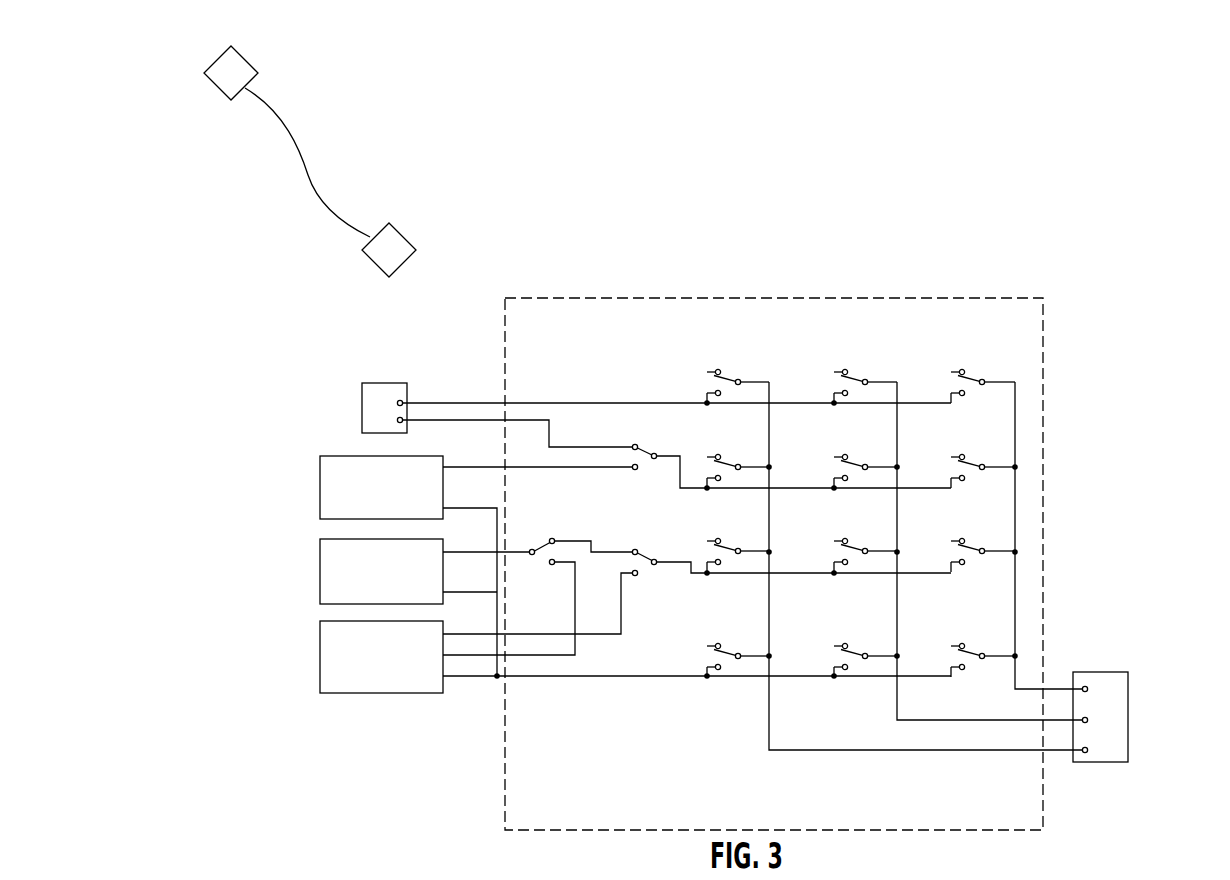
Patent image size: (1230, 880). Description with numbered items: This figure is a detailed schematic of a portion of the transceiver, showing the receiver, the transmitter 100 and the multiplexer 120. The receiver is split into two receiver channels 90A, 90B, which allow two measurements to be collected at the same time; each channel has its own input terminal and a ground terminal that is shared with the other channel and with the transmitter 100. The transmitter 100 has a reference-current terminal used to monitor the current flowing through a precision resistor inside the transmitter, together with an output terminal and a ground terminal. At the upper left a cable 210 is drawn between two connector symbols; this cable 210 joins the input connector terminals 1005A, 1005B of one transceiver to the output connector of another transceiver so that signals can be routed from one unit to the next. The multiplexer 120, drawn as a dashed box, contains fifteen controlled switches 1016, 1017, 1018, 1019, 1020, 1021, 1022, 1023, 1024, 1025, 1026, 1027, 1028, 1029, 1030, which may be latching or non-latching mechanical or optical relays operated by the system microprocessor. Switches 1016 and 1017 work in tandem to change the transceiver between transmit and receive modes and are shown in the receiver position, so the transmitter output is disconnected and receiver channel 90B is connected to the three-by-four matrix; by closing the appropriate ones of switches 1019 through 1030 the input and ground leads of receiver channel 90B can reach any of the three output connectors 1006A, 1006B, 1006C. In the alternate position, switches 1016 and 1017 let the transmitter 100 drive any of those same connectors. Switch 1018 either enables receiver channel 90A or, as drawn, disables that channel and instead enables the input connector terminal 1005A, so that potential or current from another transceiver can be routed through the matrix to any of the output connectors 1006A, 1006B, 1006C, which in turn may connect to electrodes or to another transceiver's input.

The cable 210 is at (308, 173).
The multiplexer 120 is at (948, 298).
The connector 1005A is at (362, 400).
The connector 1005B is at (362, 420).
The receiver channel 90A is at (320, 468).
The receiver channel 90B is at (320, 552).
The transmitter 100 is at (320, 634).
The switch 1016 is at (580, 538).
The switch 1017 is at (778, 544).
The switch 1018 is at (781, 453).
The switch 1019 is at (726, 373).
The switch 1020 is at (726, 455).
The switch 1021 is at (726, 543).
The switch 1022 is at (726, 648).
The switch 1023 is at (859, 373).
The switch 1024 is at (859, 455).
The switch 1025 is at (859, 543).
The switch 1026 is at (859, 648).
The switch 1027 is at (974, 373).
The switch 1028 is at (974, 455).
The switch 1029 is at (974, 543).
The switch 1030 is at (974, 648).
The output connector 1006A is at (1128, 680).
The output connector 1006B is at (1128, 716).
The output connector 1006C is at (1128, 748).